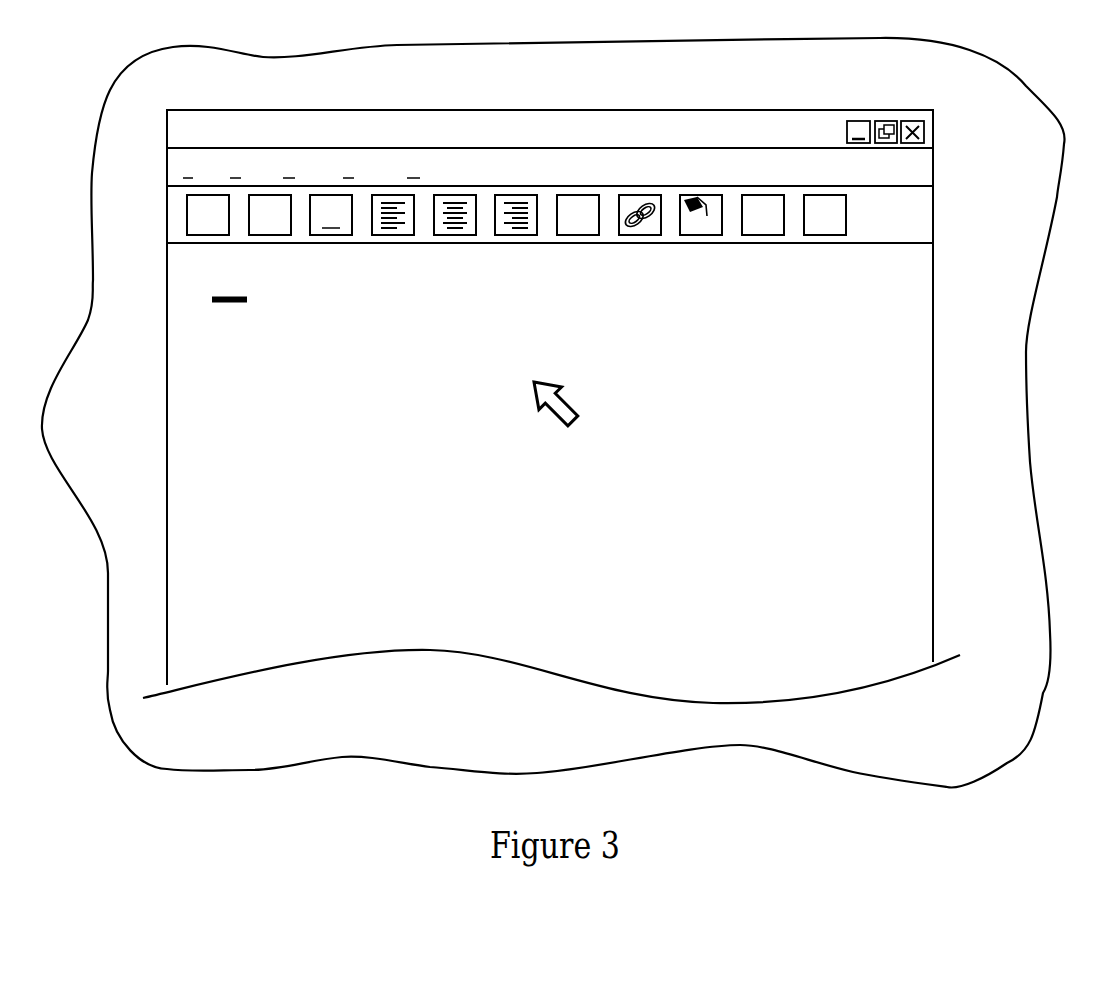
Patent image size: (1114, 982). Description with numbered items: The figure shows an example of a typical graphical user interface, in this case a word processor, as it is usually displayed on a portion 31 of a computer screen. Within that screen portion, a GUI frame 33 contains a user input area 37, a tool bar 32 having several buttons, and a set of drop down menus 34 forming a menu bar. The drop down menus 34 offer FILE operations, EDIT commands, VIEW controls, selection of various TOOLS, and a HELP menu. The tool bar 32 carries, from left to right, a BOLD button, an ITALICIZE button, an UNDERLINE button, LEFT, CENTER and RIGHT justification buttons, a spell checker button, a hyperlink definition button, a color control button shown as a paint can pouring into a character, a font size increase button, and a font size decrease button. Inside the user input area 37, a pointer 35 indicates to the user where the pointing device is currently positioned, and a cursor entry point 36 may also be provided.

The portion of a computer screen 31 is at (1037, 312).
The tool bar 32 is at (933, 217).
The GUI frame 33 is at (587, 110).
The set of drop down menus 34 is at (933, 167).
The pointer 35 is at (570, 402).
The cursor entry point 36 is at (225, 303).
The user input area 37 is at (752, 605).